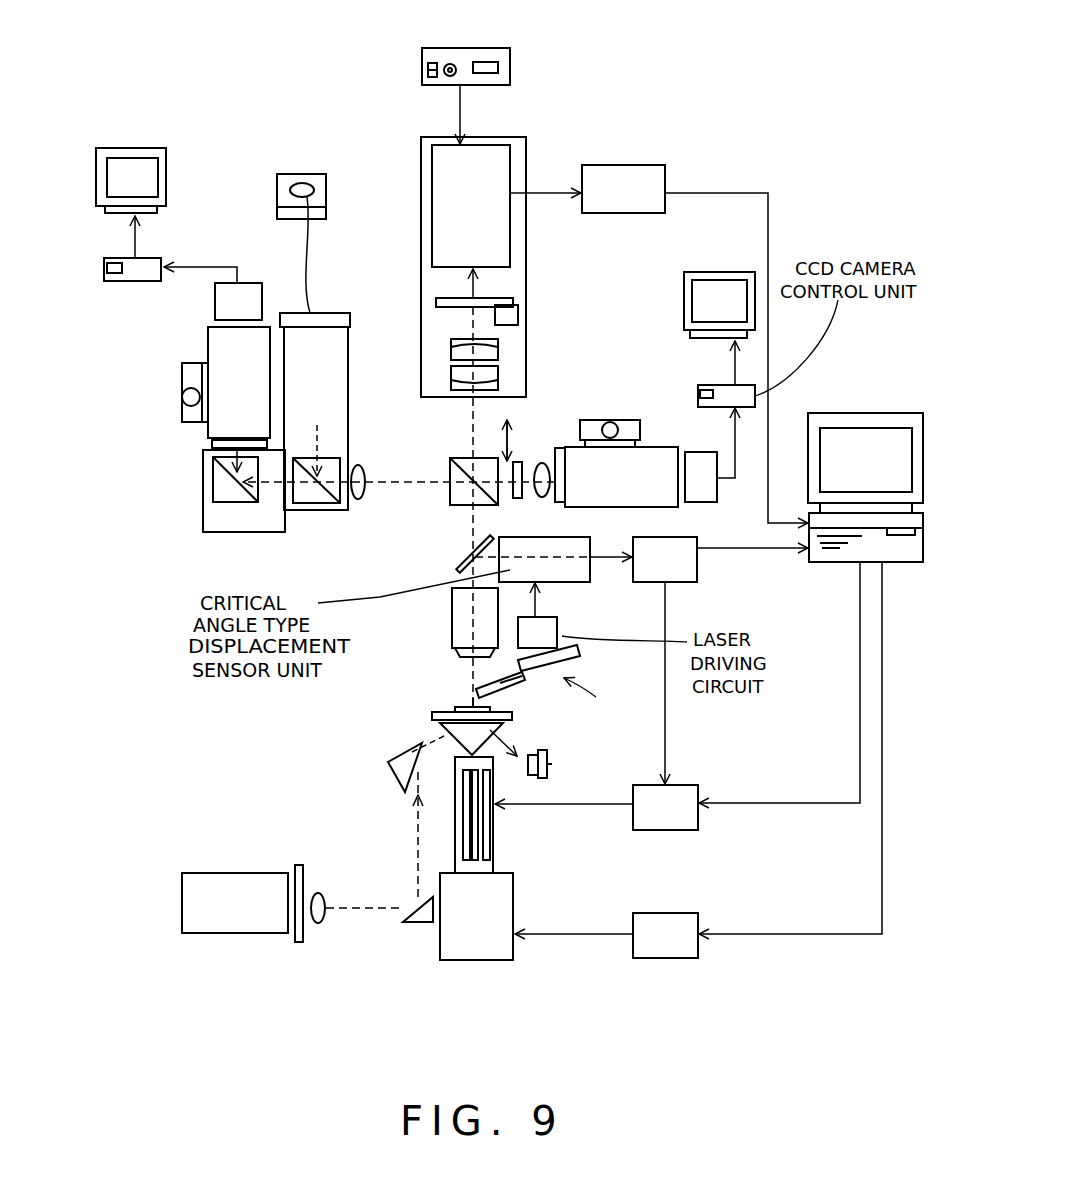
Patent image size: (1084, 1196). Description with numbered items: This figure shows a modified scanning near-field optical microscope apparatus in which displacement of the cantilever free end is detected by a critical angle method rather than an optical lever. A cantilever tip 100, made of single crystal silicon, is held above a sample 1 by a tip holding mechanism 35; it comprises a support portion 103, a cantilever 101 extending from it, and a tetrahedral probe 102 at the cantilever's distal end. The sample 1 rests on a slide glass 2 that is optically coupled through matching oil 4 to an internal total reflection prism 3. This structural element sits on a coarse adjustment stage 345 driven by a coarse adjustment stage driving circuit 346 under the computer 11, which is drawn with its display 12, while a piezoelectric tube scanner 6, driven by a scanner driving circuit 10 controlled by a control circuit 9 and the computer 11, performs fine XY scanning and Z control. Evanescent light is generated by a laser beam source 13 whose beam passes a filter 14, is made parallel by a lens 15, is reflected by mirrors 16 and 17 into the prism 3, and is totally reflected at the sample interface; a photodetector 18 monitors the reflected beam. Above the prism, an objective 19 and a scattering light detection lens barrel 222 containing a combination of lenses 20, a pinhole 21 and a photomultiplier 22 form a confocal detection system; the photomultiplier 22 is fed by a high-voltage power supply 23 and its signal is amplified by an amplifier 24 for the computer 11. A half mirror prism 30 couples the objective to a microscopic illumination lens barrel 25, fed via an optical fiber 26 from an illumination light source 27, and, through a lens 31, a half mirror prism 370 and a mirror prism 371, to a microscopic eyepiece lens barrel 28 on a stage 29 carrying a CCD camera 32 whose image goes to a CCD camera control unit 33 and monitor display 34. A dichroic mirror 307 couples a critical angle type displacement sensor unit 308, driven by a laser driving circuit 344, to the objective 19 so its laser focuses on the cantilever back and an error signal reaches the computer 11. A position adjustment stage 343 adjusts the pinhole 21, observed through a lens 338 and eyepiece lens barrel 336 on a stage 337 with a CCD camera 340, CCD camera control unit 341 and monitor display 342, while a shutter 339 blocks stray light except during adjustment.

The sample 1 is at (463, 705).
The slide glass 2 is at (510, 718).
The internal total reflection prism 3 is at (443, 728).
The matching oil 4 is at (432, 716).
The piezoelectric tube scanner 6 is at (478, 840).
The control circuit 9 is at (688, 573).
The scanner driving circuit 10 is at (660, 820).
The computer 11 is at (833, 555).
The display 12 is at (870, 413).
The laser beam source 13 is at (235, 922).
The filter 14 is at (303, 937).
The lens 15 is at (323, 913).
The mirror 16 is at (418, 918).
The mirror 17 is at (392, 765).
The photodetector 18 is at (552, 764).
The objective 19 is at (452, 628).
The combination of lenses 20 is at (498, 352).
The pinhole 21 is at (513, 300).
The photomultiplier 22 is at (475, 160).
The high-voltage power supply 23 is at (510, 68).
The amplifier 24 is at (643, 165).
The microscopic illumination lens barrel 25 is at (330, 340).
The optical fiber 26 is at (312, 250).
The illumination light source 27 is at (318, 174).
The microscopic eyepiece lens barrel 28 is at (208, 340).
The stage 29 is at (182, 392).
The half mirror prism 30 is at (450, 490).
The lens 31 is at (365, 470).
The CCD camera 32 is at (245, 295).
The CCD camera control unit 33 is at (161, 262).
The monitor display 34 is at (166, 180).
The tip holding mechanism 35 is at (580, 655).
The cantilever tip 100 is at (599, 693).
The cantilever 101 is at (510, 680).
The probe 102 is at (475, 703).
The support portion 103 is at (540, 690).
The scattering light detection lens barrel 222 is at (526, 150).
The dichroic mirror 307 is at (463, 562).
The critical angle type displacement sensor unit 308 is at (573, 572).
The eyepiece lens barrel 336 is at (640, 465).
The stage 337 is at (600, 420).
The lens 338 is at (542, 463).
The shutter 339 is at (518, 462).
The CCD camera 340 is at (700, 460).
The CCD camera control unit 341 is at (720, 387).
The monitor display 342 is at (700, 272).
The position adjustment stage 343 is at (518, 316).
The laser driving circuit 344 is at (552, 630).
The coarse adjustment stage 345 is at (490, 950).
The coarse adjustment stage driving circuit 346 is at (680, 950).
The half mirror prism 370 is at (322, 503).
The mirror prism 371 is at (213, 484).